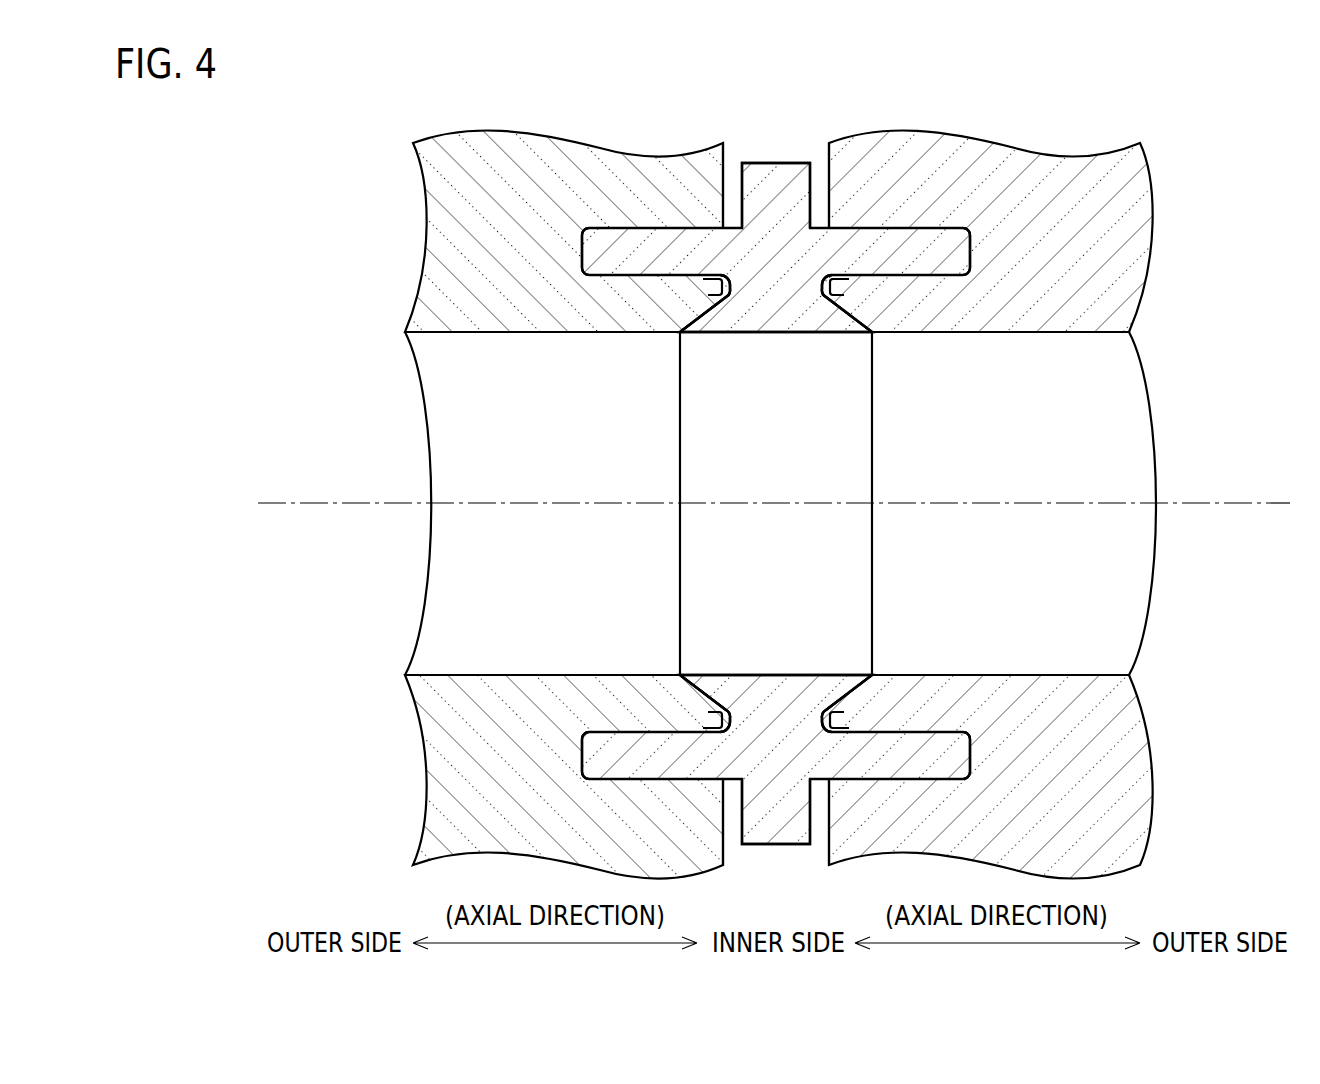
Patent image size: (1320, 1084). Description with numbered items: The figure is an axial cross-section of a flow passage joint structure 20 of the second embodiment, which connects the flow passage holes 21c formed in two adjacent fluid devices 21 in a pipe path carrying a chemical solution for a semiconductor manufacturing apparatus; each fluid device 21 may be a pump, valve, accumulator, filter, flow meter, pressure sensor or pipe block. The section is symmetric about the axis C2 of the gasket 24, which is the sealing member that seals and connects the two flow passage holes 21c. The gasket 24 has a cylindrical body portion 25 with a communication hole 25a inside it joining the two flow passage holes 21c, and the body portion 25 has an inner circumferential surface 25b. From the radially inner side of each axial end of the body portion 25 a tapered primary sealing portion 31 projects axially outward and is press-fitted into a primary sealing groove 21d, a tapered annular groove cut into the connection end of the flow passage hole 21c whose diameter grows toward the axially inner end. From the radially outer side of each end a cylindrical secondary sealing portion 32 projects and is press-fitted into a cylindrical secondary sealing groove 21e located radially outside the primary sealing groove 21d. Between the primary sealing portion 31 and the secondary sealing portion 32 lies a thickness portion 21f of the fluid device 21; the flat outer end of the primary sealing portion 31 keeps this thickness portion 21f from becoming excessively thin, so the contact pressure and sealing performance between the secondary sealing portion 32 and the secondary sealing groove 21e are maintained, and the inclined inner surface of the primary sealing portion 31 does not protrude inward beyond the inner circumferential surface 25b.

The flow passage joint structure 20 is at (444, 108).
The fluid device 21 is at (418, 804).
The flow passage hole 21c is at (558, 487).
The primary sealing groove 21d is at (715, 308).
The secondary sealing groove 21e is at (647, 262).
The thickness portion 21f is at (704, 293).
The gasket 24 is at (782, 151).
The body portion 25 is at (777, 308).
The communication hole 25a is at (797, 487).
The inner circumferential surface of the body portion 25b is at (776, 677).
The primary sealing portion 31 is at (712, 685).
The secondary sealing portion 32 is at (627, 750).
The axis of the gasket C2 is at (1243, 503).